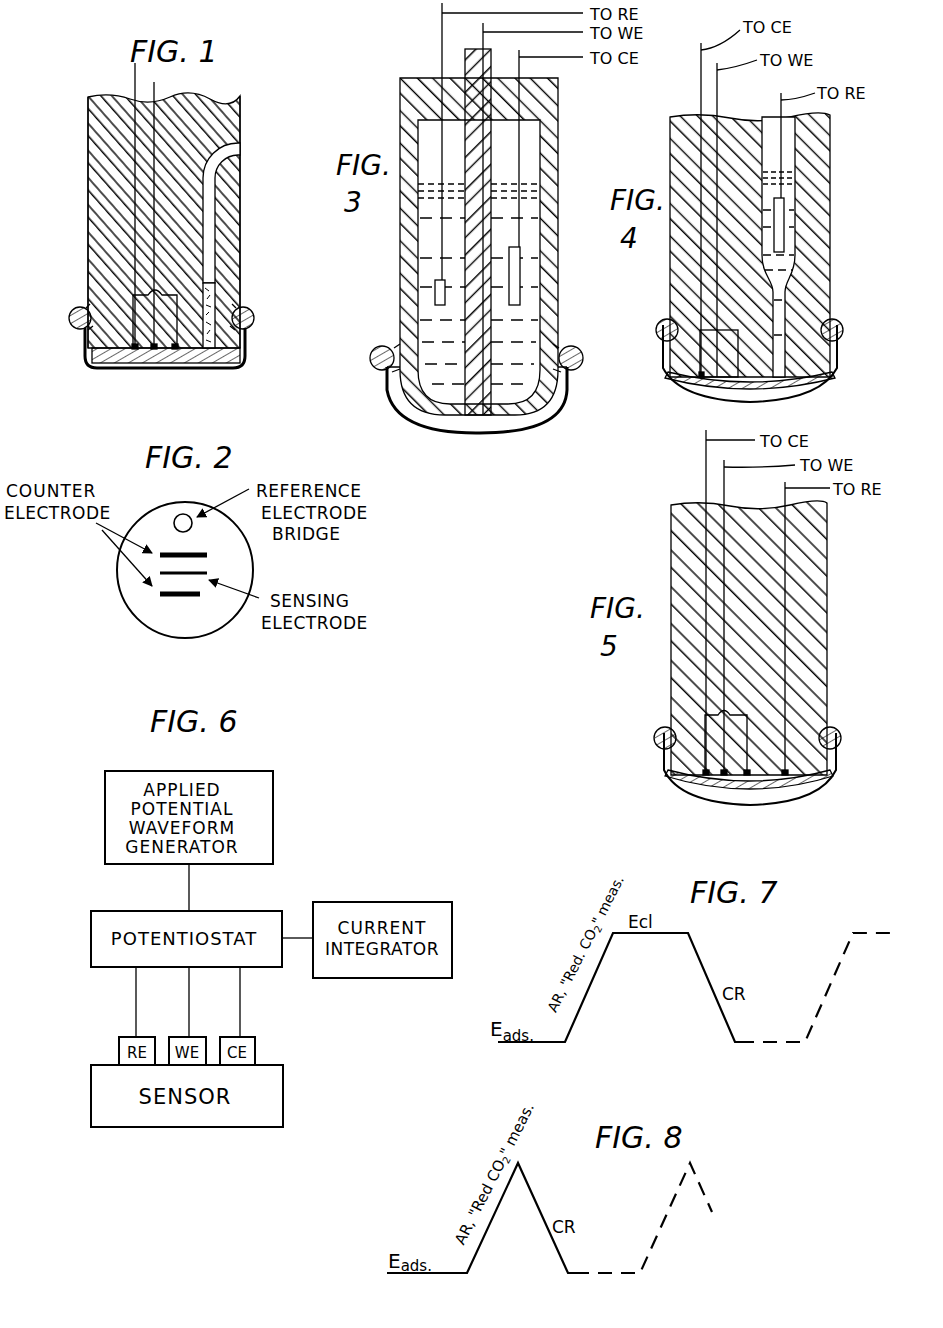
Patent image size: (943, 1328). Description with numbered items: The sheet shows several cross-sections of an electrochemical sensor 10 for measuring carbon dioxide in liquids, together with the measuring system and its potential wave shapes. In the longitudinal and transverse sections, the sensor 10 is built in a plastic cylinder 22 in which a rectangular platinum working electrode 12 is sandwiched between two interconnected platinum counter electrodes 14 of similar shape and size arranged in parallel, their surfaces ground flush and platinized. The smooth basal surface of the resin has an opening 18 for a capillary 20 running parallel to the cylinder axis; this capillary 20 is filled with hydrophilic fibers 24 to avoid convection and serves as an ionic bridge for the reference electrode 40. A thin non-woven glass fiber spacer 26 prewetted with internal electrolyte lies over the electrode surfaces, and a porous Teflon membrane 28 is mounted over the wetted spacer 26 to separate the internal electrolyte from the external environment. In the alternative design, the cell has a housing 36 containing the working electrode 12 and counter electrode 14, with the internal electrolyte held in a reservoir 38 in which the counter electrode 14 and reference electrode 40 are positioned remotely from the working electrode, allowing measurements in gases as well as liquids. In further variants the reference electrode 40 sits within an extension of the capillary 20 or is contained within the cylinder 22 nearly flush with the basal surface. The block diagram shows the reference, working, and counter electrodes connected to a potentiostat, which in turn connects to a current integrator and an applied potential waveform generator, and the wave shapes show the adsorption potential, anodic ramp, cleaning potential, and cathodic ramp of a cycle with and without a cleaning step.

In FIG. 1, the sensor 10 is at (272, 106).
In FIG. 1, the working electrode 12 is at (150, 366).
In FIG. 2, the working electrode 12 is at (207, 573).
In FIG. 3, the working electrode 12 is at (481, 415).
In FIG. 4, the working electrode 12 is at (722, 392).
In FIG. 5, the working electrode 12 is at (728, 792).
In FIG. 1, the counter electrodes 14 is at (120, 366).
In FIG. 2, the counter electrodes 14 is at (207, 556).
In FIG. 3, the counter electrodes 14 is at (520, 300).
In FIG. 4, the counter electrodes 14 is at (770, 406).
In FIG. 5, the counter electrodes 14 is at (700, 792).
In FIG. 1, the opening 18 is at (238, 146).
In FIG. 1, the capillary 20 is at (208, 266).
In FIG. 2, the capillary 20 is at (183, 513).
In FIG. 4, the capillary 20 is at (785, 322).
In FIG. 1, the plastic cylinder 22 is at (88, 165).
In FIG. 2, the plastic cylinder 22 is at (128, 616).
In FIG. 4, the plastic cylinder 22 is at (750, 245).
In FIG. 5, the plastic cylinder 22 is at (827, 583).
In FIG. 1, the hydrophilic fibers 24 is at (216, 296).
In FIG. 1, the glass fiber spacer 26 is at (240, 352).
In FIG. 4, the glass fiber spacer 26 is at (815, 372).
In FIG. 5, the glass fiber spacer 26 is at (820, 772).
In FIG. 1, the Teflon membrane 28 is at (226, 368).
In FIG. 3, the Teflon membrane 28 is at (528, 433).
In FIG. 4, the Teflon membrane 28 is at (803, 385).
In FIG. 5, the Teflon membrane 28 is at (672, 778).
In FIG. 3, the housing 36 is at (558, 131).
In FIG. 3, the reservoir 38 is at (530, 232).
In FIG. 3, the reference electrode 40 is at (435, 297).
In FIG. 4, the reference electrode 40 is at (797, 229).
In FIG. 5, the reference electrode 40 is at (790, 788).